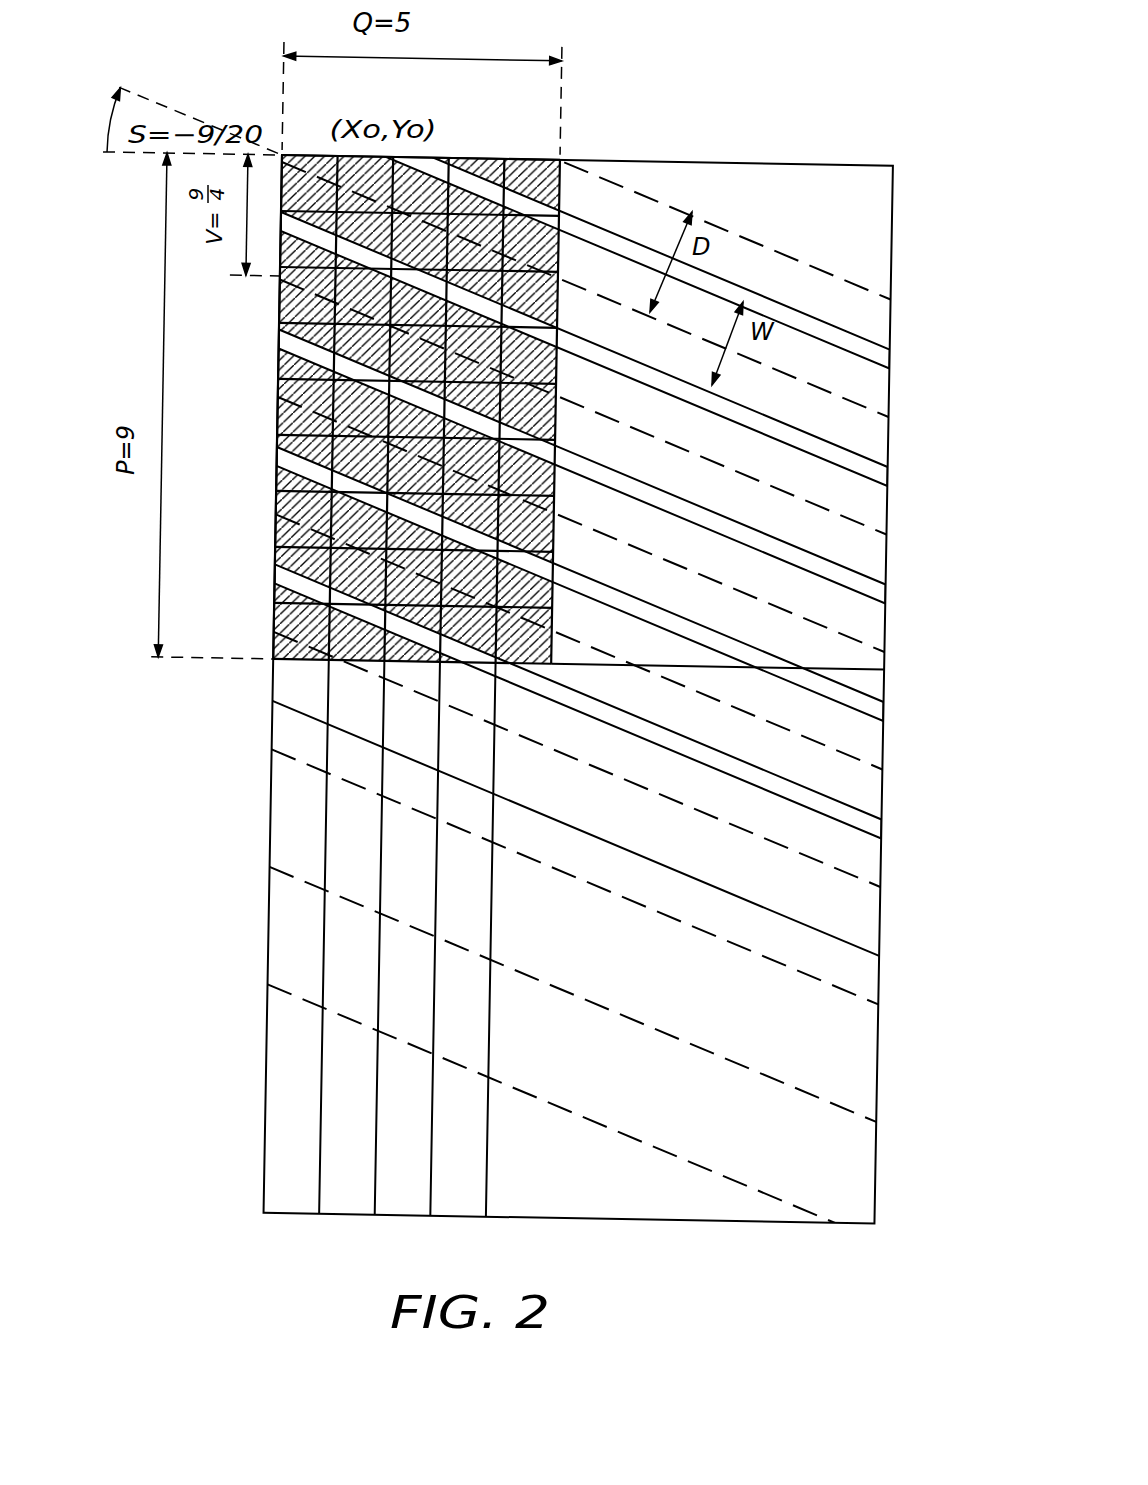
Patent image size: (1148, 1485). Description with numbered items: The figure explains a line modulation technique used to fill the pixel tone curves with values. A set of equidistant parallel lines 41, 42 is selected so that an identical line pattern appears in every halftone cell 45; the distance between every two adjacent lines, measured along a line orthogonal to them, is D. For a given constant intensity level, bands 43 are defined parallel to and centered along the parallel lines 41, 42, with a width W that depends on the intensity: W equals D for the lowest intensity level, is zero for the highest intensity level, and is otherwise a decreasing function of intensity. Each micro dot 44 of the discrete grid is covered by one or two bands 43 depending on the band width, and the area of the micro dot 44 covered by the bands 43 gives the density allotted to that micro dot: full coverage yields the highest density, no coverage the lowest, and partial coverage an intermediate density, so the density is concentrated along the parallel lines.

The parallel line 41 is at (893, 295).
The parallel line 42 is at (893, 413).
The band 43 is at (295, 513).
The micro dot 44 is at (527, 129).
The halftone cell 45 is at (277, 633).